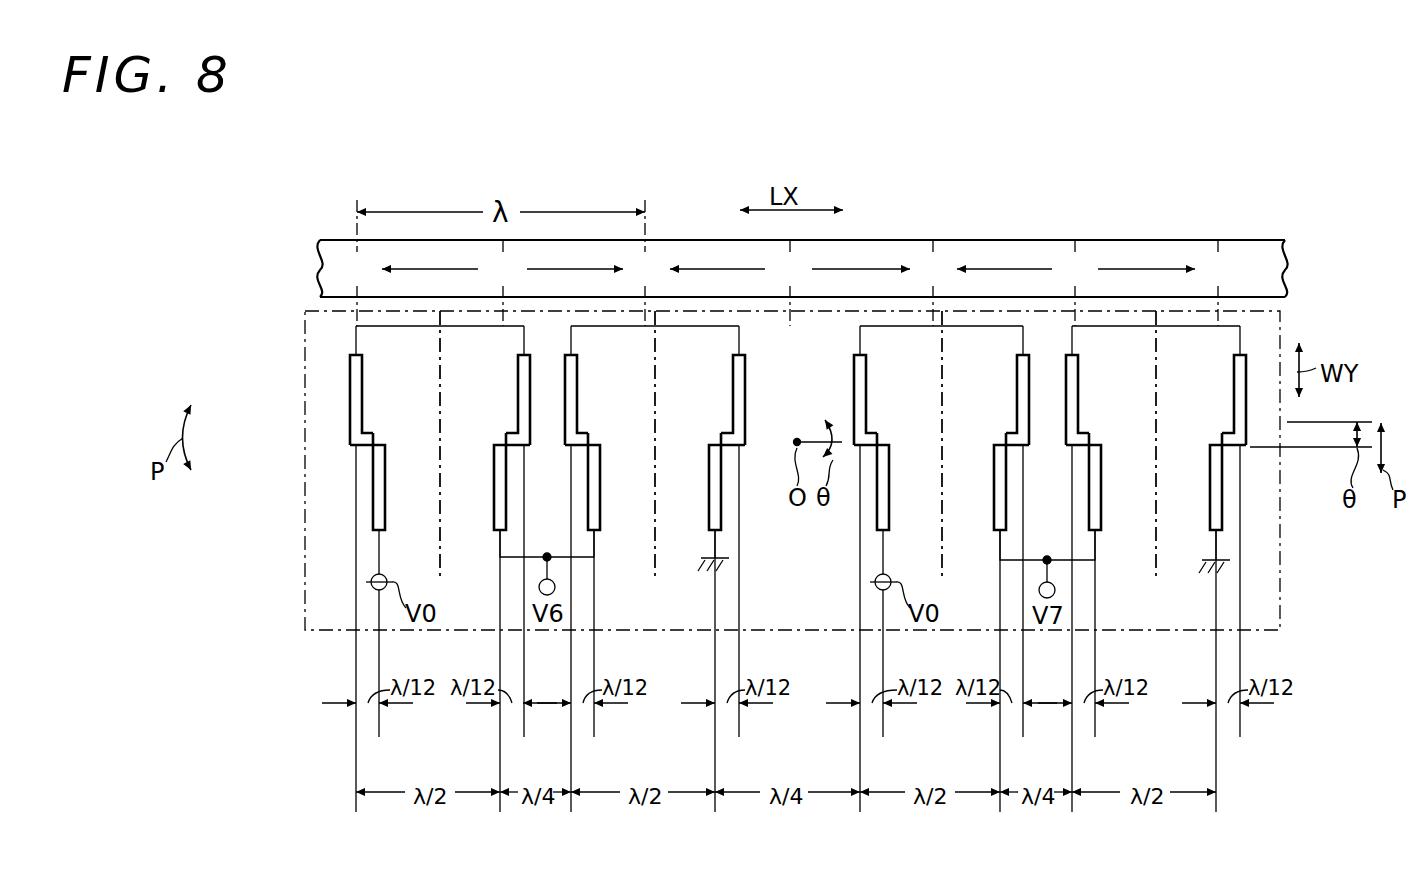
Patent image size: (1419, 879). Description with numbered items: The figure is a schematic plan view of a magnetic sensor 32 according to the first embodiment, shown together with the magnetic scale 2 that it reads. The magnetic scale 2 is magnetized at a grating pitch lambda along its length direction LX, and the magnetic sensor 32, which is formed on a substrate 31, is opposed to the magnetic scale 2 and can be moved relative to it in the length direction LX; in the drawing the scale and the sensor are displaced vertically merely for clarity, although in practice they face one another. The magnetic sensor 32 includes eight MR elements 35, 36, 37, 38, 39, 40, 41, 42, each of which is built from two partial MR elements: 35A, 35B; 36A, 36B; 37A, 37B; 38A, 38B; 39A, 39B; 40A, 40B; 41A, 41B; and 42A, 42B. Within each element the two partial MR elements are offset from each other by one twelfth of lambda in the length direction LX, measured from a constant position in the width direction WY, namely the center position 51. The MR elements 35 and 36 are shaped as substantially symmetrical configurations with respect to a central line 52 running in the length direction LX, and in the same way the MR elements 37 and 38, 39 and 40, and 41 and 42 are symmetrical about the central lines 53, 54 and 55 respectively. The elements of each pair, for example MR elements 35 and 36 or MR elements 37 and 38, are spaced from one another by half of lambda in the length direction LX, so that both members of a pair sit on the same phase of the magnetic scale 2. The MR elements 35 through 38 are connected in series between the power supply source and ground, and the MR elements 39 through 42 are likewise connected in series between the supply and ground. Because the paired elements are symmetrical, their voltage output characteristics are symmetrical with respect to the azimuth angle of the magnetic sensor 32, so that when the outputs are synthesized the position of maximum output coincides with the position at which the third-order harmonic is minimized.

The magnetic scale 2 is at (908, 240).
The substrate 31 is at (303, 522).
The magnetic sensor 32 is at (330, 410).
The MR element 35 is at (413, 442).
The partial MR element 35A is at (363, 366).
The partial MR element 35B is at (390, 442).
The MR element 36 is at (458, 442).
The partial MR element 36A is at (524, 398).
The partial MR element 36B is at (496, 493).
The MR element 37 is at (628, 442).
The partial MR element 37A is at (578, 366).
The partial MR element 37B is at (605, 442).
The MR element 38 is at (673, 442).
The partial MR element 38A is at (739, 398).
The partial MR element 38B is at (711, 493).
The MR element 39 is at (917, 442).
The partial MR element 39A is at (867, 366).
The partial MR element 39B is at (894, 442).
The MR element 40 is at (957, 442).
The partial MR element 40A is at (1023, 398).
The partial MR element 40B is at (995, 493).
The MR element 41 is at (1129, 442).
The partial MR element 41A is at (1079, 366).
The partial MR element 41B is at (1106, 442).
The MR element 42 is at (1173, 442).
The partial MR element 42A is at (1240, 398).
The partial MR element 42B is at (1211, 493).
The center position 51 is at (1297, 448).
The central line 52 is at (440, 528).
The central line 53 is at (662, 490).
The central line 54 is at (946, 495).
The central line 55 is at (1150, 497).